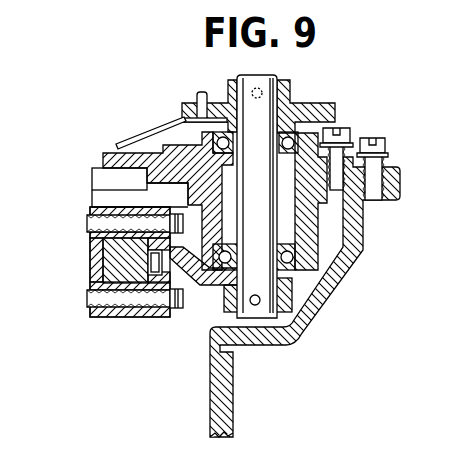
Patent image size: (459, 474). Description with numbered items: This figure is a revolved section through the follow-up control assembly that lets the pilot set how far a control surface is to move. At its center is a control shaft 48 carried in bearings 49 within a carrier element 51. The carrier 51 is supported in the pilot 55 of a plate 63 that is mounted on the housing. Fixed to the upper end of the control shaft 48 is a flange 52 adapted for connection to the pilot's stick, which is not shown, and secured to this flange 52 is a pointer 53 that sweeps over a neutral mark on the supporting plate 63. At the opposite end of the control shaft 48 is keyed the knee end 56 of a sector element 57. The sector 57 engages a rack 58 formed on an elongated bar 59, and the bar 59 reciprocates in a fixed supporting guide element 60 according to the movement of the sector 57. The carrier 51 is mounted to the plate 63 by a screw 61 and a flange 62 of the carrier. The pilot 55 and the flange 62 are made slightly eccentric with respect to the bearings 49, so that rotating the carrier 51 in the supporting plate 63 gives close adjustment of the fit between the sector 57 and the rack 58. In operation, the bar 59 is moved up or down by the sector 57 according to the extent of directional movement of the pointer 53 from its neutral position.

The control shaft 48 is at (264, 206).
The bearings 49 is at (210, 134).
The carrier element 51 is at (305, 235).
The flange 52 is at (335, 110).
The pointer 53 is at (137, 138).
The pilot 55 is at (190, 187).
The knee end 56 is at (226, 314).
The sector element 57 is at (203, 283).
The rack 58 is at (153, 262).
The elongated bar 59 is at (107, 245).
The supporting guide element 60 is at (120, 317).
The screw 61 is at (340, 130).
The flange 62 is at (367, 140).
The plate 63 is at (101, 157).